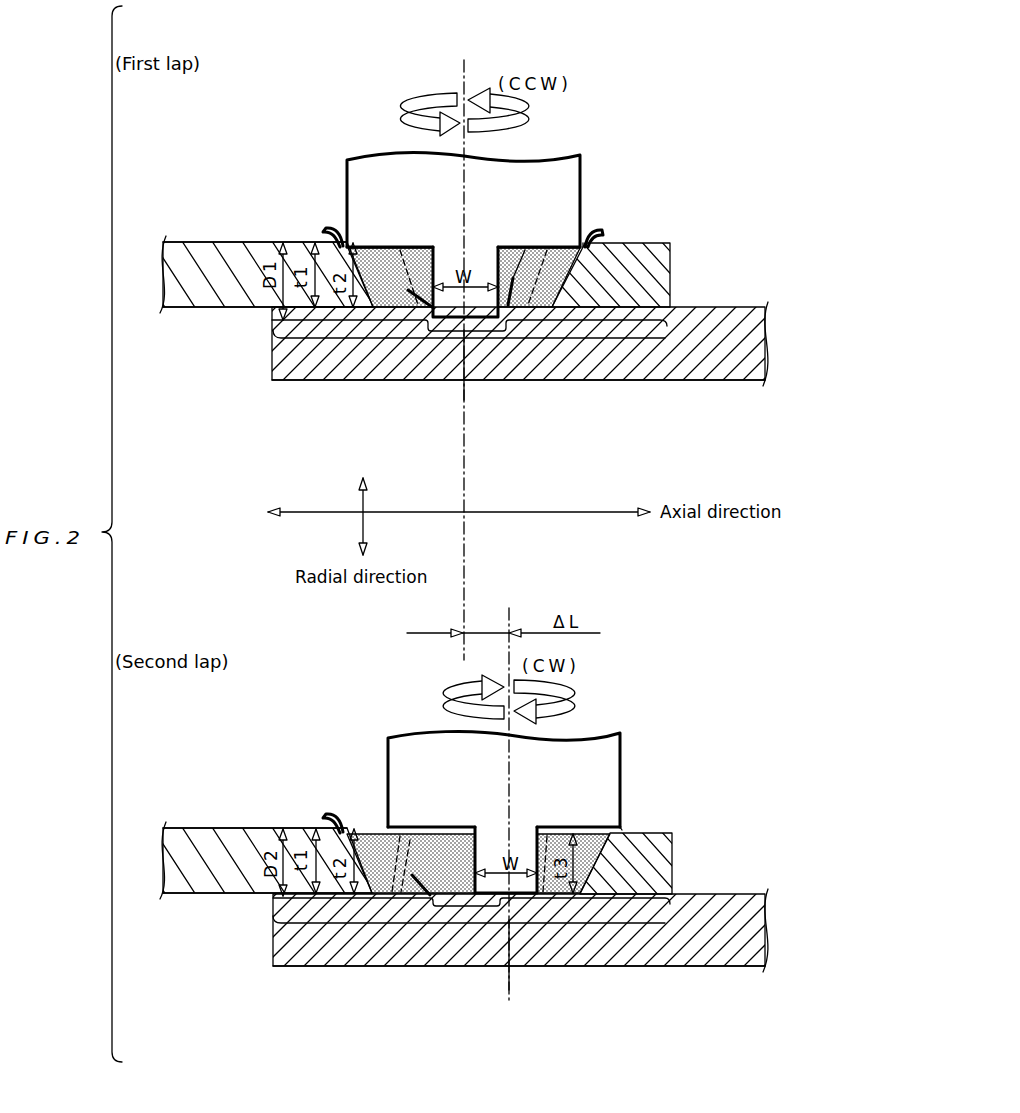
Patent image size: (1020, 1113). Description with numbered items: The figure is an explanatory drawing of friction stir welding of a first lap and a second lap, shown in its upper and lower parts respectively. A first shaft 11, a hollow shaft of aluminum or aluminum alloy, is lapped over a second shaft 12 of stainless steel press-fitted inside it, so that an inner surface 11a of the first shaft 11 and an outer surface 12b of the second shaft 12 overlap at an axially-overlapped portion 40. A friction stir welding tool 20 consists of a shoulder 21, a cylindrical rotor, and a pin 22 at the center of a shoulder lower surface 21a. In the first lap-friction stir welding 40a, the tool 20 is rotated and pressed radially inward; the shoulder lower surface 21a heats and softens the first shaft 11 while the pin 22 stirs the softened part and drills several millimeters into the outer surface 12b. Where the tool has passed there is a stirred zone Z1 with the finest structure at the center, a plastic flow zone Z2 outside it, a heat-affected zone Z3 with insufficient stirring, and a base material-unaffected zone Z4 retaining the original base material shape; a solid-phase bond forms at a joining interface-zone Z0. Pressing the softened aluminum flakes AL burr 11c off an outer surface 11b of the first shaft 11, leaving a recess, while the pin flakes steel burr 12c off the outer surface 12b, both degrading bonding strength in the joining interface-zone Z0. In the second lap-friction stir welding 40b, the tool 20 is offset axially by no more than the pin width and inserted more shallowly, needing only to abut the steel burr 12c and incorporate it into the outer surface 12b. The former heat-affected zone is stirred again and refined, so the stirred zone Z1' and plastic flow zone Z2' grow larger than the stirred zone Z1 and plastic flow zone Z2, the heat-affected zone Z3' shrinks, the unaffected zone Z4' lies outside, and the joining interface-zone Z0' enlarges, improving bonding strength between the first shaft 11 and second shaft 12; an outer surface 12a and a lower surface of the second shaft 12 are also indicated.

The first shaft 11 is at (190, 222).
The inner surface of the first shaft 11a is at (230, 308).
The outer surface of the first shaft 11b is at (247, 242).
The AL burr 11c is at (340, 230).
The second shaft 12 is at (748, 288).
The lower surface of second plate 12a is at (707, 381).
The outer surface of the second shaft 12b is at (700, 308).
The steel burr 12c is at (408, 290).
The friction stir welding tool 20 is at (582, 139).
The shoulder 21 is at (583, 192).
The shoulder lower surface 21a is at (583, 249).
The pin 22 is at (447, 262).
The axially-overlapped portion 40 is at (466, 385).
The first lap-friction stir welding 40a is at (483, 35).
The second lap-friction stir welding 40b is at (528, 588).
The joining interface-zone Z0 is at (508, 386).
The stirred zone Z1 is at (540, 352).
The plastic flow zone Z2 is at (573, 351).
The heat-affected zone Z3 is at (615, 350).
The base material-unaffected zone Z4 is at (665, 340).
The joining interface-zone of the second lap Z0' is at (526, 962).
The stirred zone of the second lap Z1' is at (421, 935).
The plastic flow zone of the second lap Z2' is at (587, 939).
The heat-affected zone of the second lap Z3' is at (636, 940).
The zone 4 (second lap) Z4' is at (698, 949).